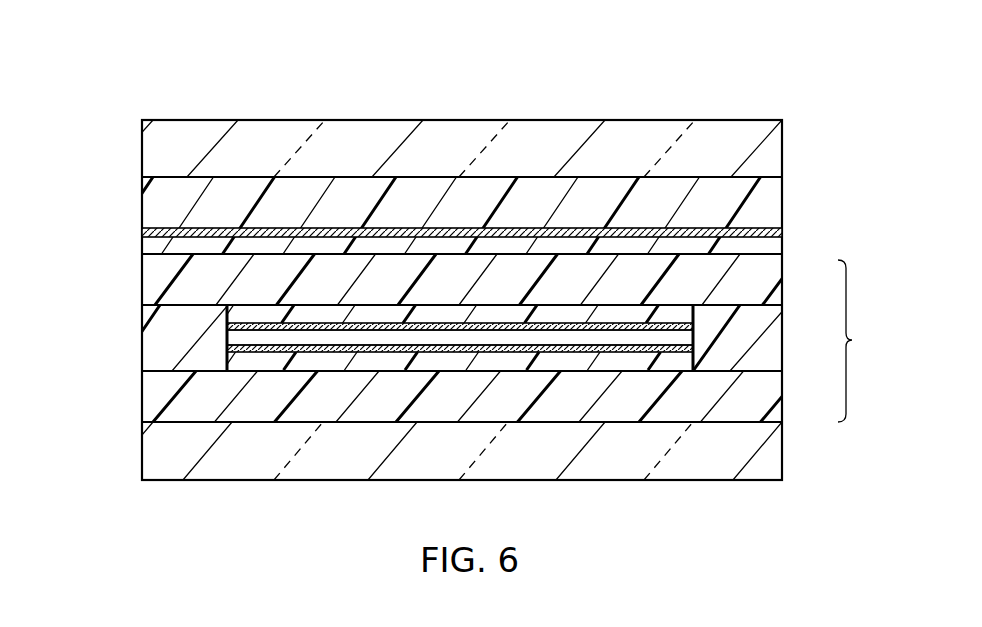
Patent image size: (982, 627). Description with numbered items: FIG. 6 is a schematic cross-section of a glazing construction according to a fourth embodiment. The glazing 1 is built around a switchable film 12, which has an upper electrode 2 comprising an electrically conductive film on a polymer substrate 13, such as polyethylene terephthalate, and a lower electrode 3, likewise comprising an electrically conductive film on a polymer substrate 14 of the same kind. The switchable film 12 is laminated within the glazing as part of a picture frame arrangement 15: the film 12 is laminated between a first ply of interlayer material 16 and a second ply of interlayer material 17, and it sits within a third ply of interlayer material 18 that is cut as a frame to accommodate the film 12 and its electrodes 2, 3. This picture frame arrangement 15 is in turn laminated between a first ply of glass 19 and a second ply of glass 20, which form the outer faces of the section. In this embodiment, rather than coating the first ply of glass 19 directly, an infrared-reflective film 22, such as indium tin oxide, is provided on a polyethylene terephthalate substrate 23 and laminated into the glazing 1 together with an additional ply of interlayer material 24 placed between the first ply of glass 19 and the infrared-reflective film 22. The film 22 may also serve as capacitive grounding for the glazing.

The glazing 1 is at (548, 102).
The upper electrode 2 is at (227, 323).
The lower electrode 3 is at (227, 349).
The switchable film 12 is at (227, 336).
The polymer substrate 13 is at (213, 313).
The polymer substrate 14 is at (227, 361).
The picture frame arrangement 15 is at (862, 341).
The first ply of interlayer material 16 is at (768, 280).
The second ply of interlayer material 17 is at (765, 398).
The third ply of interlayer material 18 is at (765, 337).
The first ply of glass 19 is at (200, 141).
The second ply of glass 20 is at (197, 456).
The infrared-reflective film 22 is at (143, 232).
The polyethylene terephthalate substrate 23 is at (153, 246).
The additional ply of interlayer material 24 is at (765, 208).